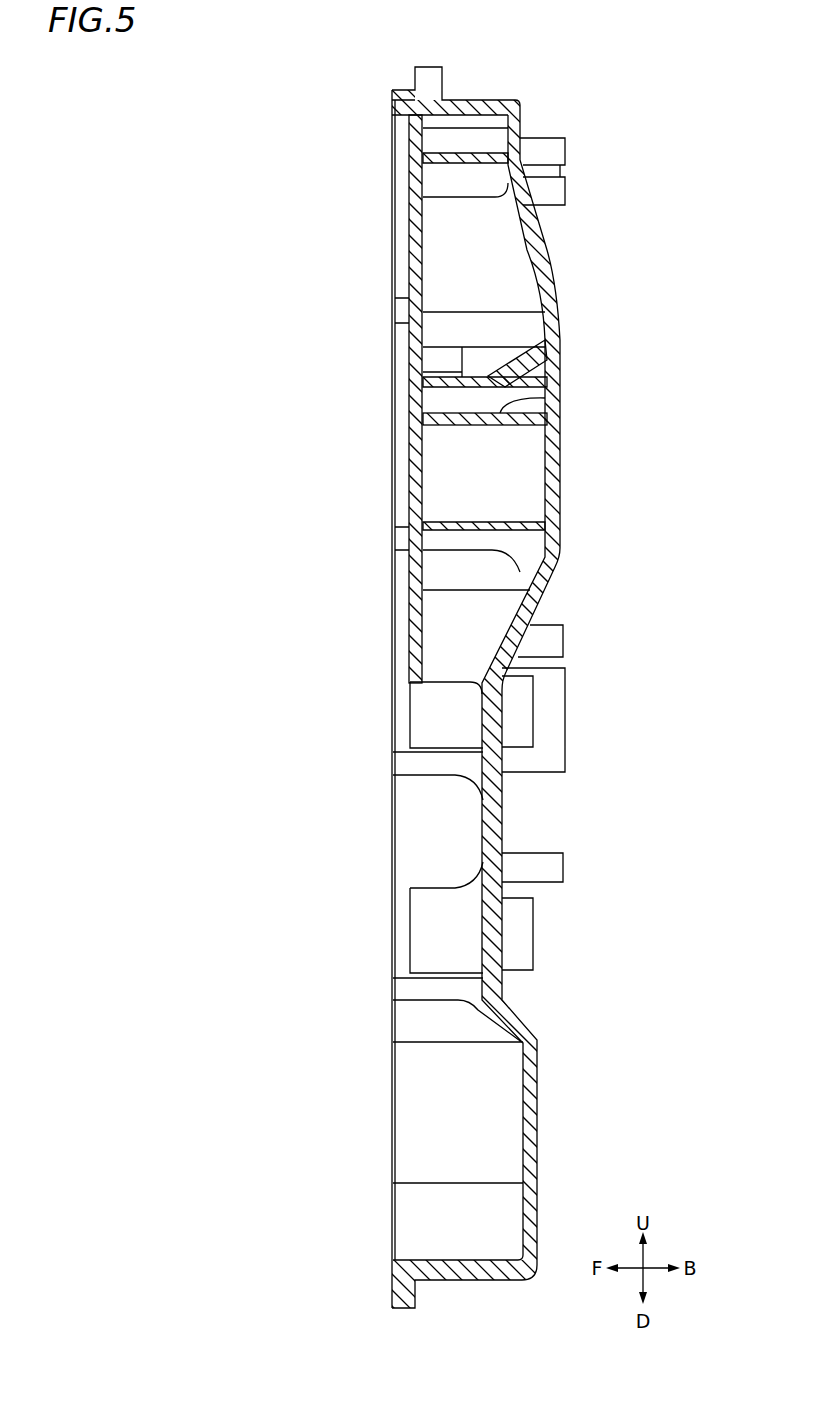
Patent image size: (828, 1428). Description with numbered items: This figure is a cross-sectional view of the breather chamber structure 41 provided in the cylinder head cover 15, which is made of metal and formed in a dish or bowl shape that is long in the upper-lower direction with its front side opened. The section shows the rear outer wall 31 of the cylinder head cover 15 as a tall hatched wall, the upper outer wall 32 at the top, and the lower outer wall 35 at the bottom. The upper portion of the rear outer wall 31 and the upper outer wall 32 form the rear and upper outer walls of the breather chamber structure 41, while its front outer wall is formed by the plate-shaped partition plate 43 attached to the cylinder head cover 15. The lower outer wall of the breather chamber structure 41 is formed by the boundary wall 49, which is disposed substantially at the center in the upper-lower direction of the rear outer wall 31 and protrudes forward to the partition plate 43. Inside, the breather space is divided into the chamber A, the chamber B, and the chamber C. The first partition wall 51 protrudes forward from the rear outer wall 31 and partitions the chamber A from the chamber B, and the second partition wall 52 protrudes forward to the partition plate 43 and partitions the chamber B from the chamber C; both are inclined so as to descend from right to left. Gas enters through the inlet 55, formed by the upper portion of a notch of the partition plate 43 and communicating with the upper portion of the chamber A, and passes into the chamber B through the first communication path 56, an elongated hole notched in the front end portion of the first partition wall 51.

The cylinder head cover 15 is at (563, 104).
The rear outer wall 31 is at (556, 521).
The upper outer wall 32 is at (466, 100).
The lower outer wall 35 is at (455, 1283).
The breather chamber structure 41 is at (350, 416).
The partition plate 43 is at (410, 487).
The boundary wall 49 is at (447, 700).
The first partition wall 51 is at (490, 372).
The second partition wall 52 is at (487, 428).
The inlet 55 is at (446, 178).
The first communication path 56 is at (462, 384).
The chamber A is at (483, 255).
The chamber B is at (508, 400).
The chamber C is at (500, 487).